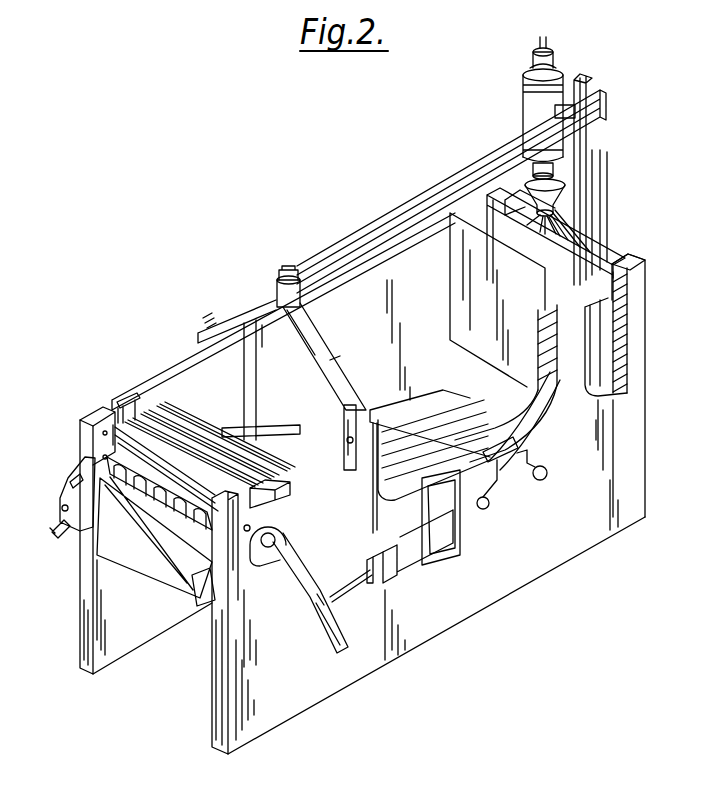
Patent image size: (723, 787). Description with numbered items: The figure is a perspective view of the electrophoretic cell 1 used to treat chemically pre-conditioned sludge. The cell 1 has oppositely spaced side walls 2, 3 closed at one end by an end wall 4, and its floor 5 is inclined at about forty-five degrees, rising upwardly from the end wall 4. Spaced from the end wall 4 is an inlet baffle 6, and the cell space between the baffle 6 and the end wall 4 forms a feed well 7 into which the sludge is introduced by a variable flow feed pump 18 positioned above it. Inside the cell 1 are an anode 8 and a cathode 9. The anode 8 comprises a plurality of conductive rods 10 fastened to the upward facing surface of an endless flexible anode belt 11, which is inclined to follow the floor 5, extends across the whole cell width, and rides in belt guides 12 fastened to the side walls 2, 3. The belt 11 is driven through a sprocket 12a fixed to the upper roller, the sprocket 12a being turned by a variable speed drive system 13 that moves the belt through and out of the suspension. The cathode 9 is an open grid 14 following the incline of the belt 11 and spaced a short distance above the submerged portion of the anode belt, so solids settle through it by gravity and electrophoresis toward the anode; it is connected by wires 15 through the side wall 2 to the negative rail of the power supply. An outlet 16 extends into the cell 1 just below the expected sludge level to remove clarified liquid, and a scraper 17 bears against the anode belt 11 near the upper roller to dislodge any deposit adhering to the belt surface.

The cell 1 is at (381, 181).
The side wall 2 is at (630, 418).
The side wall 3 is at (170, 372).
The end wall 4 is at (626, 258).
The floor 5 is at (160, 550).
The inlet baffle 6 is at (458, 278).
The feed well 7 is at (488, 215).
The anode 8 is at (152, 421).
The cathode 9 is at (291, 416).
The conductive rods 10 is at (190, 438).
The anode belt 11 is at (240, 435).
The belt guides 12 is at (249, 435).
The sprocket 12a is at (287, 522).
The variable speed drive system 13 is at (433, 563).
The open grid 14 is at (398, 396).
The wires 15 is at (527, 450).
The outlet 16 is at (58, 523).
The scraper 17 is at (145, 540).
The variable flow feed pump 18 is at (578, 180).